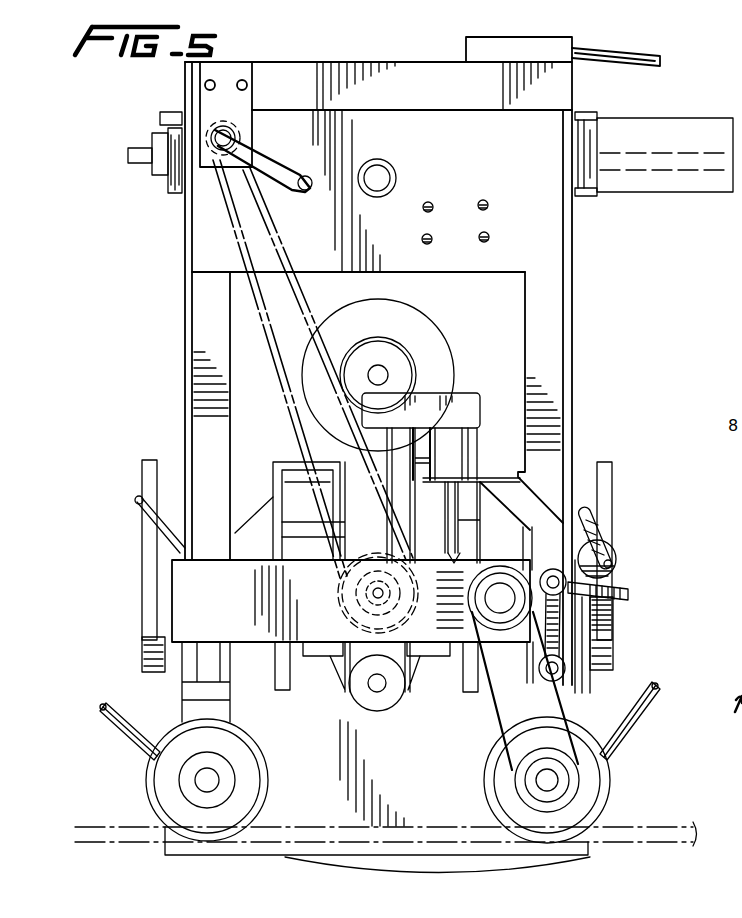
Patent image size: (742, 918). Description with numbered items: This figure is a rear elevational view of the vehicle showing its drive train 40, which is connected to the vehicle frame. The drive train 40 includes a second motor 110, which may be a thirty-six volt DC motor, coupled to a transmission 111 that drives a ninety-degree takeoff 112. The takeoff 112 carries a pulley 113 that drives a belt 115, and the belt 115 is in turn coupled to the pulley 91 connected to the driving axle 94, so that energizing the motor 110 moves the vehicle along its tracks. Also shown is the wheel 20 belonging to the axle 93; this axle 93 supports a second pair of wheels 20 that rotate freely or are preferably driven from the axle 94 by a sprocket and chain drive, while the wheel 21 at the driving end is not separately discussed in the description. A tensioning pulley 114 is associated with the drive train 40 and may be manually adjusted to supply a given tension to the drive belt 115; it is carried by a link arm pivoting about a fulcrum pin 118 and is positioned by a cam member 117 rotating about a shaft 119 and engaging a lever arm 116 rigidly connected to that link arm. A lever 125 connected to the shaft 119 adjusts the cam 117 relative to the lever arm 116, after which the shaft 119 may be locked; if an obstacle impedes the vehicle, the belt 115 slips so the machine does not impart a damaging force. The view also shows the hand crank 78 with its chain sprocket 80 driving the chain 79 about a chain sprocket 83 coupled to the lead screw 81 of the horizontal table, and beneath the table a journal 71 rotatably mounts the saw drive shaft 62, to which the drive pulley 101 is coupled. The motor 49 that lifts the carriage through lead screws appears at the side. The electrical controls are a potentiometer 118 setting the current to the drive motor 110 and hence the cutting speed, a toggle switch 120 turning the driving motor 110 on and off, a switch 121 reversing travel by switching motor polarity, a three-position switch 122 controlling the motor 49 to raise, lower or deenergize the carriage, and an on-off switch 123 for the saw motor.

The wheel 20 is at (153, 815).
The wheel 21 is at (613, 770).
The drive train 40 is at (626, 653).
The motor 49 is at (665, 193).
The saw drive shaft 62 is at (402, 694).
The journal 71 is at (340, 660).
The hand crank 78 is at (307, 168).
The chain 79 is at (275, 397).
The chain sprocket 80 is at (225, 167).
The lead screw 81 is at (365, 600).
The chain sprocket 83 is at (150, 458).
The pulley 91 is at (577, 788).
The axle 93 is at (210, 781).
The driving axle 94 is at (547, 787).
The drive pulley 101 is at (368, 690).
The second motor 110 is at (380, 438).
The transmission 111 is at (473, 393).
The 90° takeoff 112 is at (480, 453).
The pulley 113 is at (493, 565).
The tensioning pulley 114 is at (557, 683).
The drive belt 115 is at (492, 718).
The lever arm 116 is at (628, 592).
The cam member 117 is at (613, 553).
The potentiometer 118 is at (373, 158).
The shaft 119 is at (612, 566).
The toggle switch 120 is at (429, 202).
The switch 121 is at (424, 236).
The third switch 122 is at (483, 200).
The on-off switch 123 is at (488, 236).
The lever 125 is at (590, 512).